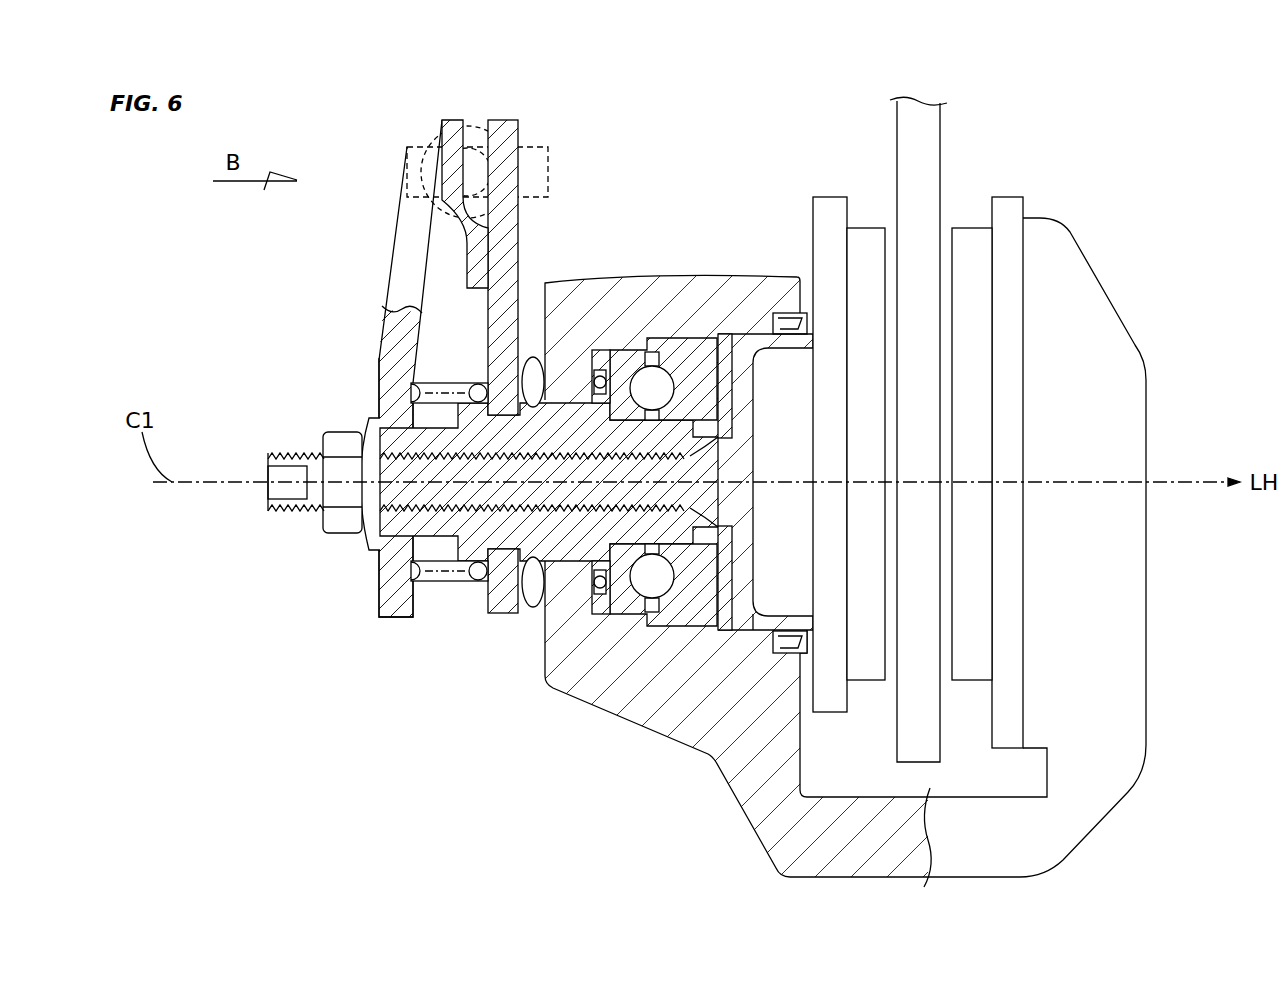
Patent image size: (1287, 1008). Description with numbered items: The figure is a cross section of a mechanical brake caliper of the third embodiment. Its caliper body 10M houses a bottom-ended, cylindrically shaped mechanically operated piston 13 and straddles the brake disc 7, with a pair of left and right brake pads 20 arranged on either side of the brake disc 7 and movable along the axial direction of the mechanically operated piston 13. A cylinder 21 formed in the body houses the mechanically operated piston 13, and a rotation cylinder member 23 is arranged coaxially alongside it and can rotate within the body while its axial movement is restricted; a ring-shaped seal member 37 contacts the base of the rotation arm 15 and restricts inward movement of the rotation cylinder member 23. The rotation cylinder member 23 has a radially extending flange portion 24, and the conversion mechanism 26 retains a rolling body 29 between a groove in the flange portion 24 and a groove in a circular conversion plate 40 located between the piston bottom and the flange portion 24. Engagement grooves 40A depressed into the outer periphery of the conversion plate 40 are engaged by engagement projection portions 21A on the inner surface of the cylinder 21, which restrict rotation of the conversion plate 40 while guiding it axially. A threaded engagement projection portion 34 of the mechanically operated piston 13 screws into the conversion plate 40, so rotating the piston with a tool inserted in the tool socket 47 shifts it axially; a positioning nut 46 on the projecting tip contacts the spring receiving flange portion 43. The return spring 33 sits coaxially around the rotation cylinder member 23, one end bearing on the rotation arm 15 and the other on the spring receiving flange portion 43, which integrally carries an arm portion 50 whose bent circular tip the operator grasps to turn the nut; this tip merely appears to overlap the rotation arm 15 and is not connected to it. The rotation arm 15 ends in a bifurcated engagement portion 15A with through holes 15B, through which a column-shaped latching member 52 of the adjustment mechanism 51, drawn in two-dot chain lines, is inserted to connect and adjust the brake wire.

The brake disc 7 is at (926, 126).
The caliper body 10M is at (607, 715).
The mechanically operated piston 13 is at (731, 350).
The rotation arm 15 is at (518, 235).
The engagement portion 15A is at (509, 120).
The through hole 15B is at (452, 168).
The brake pad 20 is at (870, 232).
The cylinder 21 is at (738, 360).
The engagement projection portion 21A is at (720, 378).
The rotation cylinder member 23 is at (573, 412).
The flange portion 24 is at (632, 365).
The conversion mechanism 26 is at (689, 352).
The rolling body 29 is at (651, 383).
The return spring 33 is at (450, 380).
The engagement projection portion 34 is at (487, 584).
The seal member 37 is at (531, 381).
The conversion plate 40 is at (646, 483).
The engagement groove 40A is at (678, 364).
The spring receiving flange portion 43 is at (386, 571).
The positioning nut 46 is at (340, 434).
The tool socket 47 is at (272, 472).
The arm portion 50 is at (400, 243).
The adjustment mechanism 51 is at (554, 151).
The latching member 52 is at (407, 167).